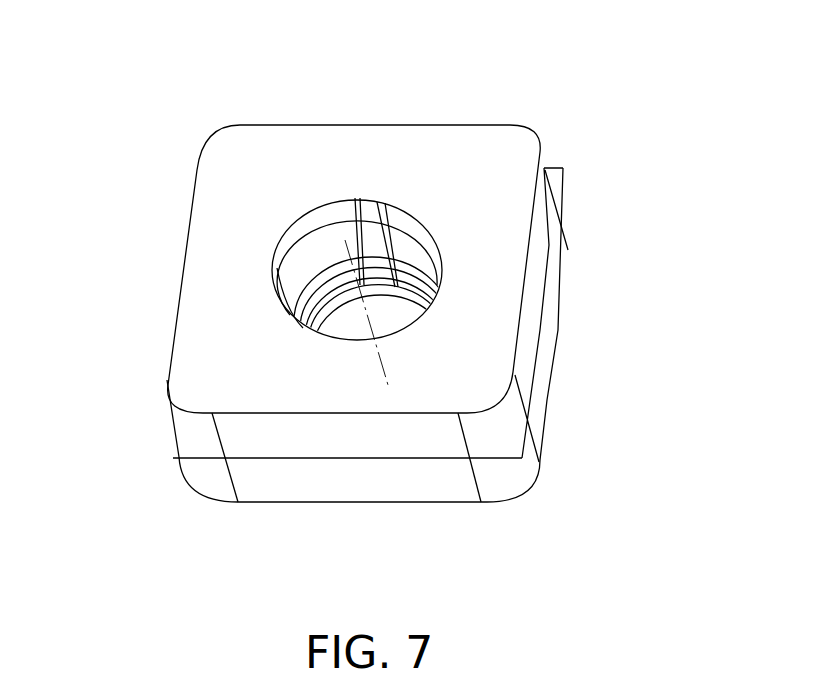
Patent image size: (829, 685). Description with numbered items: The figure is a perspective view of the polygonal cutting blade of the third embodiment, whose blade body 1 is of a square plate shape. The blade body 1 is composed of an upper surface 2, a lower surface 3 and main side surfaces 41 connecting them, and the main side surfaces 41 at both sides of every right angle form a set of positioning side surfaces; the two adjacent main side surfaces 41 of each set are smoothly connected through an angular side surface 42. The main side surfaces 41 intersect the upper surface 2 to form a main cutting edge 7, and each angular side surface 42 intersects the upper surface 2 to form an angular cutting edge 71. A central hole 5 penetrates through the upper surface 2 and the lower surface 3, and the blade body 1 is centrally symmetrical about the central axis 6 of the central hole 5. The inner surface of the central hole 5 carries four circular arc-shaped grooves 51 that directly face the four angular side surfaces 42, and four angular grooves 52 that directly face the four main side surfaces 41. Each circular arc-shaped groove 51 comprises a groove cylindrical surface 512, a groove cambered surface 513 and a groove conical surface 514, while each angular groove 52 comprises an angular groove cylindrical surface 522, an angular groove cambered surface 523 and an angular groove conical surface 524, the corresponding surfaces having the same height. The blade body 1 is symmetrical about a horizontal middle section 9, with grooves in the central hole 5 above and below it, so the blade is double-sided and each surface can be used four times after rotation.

The blade body 1 is at (330, 163).
The upper surface 2 is at (245, 295).
The lower surface 3 is at (448, 505).
The central hole 5 is at (395, 305).
The circular arc-shaped groove 51 is at (208, 585).
The groove cylindrical surface 512 is at (303, 215).
The groove cambered surface 513 is at (313, 247).
The groove conical surface 514 is at (317, 275).
The angular groove 52 is at (270, 270).
The angular groove cylindrical surface 522 is at (376, 248).
The angular groove cambered surface 523 is at (372, 212).
The angular groove conical surface 524 is at (366, 192).
The central axis 6 is at (358, 310).
The main cutting edge 7 is at (355, 125).
The angular cutting edge 71 is at (540, 140).
The horizontal middle section 9 is at (348, 460).
The main side surface 41 is at (240, 470).
The angular side surface 42 is at (203, 467).